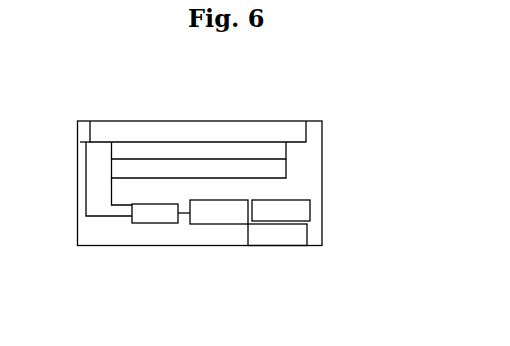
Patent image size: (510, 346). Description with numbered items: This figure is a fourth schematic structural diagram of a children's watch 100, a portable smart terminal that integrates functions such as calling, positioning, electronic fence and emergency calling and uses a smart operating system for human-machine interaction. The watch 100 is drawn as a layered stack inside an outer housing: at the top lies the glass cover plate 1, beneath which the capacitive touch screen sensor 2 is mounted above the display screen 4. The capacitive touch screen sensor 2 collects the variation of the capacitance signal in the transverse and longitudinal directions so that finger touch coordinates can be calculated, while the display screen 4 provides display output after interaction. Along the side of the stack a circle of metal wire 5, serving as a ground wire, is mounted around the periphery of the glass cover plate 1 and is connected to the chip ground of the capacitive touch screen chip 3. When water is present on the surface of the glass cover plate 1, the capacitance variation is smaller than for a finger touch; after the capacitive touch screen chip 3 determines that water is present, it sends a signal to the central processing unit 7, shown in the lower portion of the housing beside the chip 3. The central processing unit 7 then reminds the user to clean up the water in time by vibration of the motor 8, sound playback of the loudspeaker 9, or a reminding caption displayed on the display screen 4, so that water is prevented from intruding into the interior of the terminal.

The children's watch 100 is at (306, 211).
The glass cover plate 1 is at (270, 114).
The capacitive touch screen sensor 2 is at (268, 158).
The capacitive touch screen chip 3 is at (147, 227).
The display screen 4 is at (272, 178).
The metal wire 5 is at (77, 152).
The central processing unit 7 is at (217, 225).
The motor 8 is at (309, 224).
The loudspeaker 9 is at (295, 245).